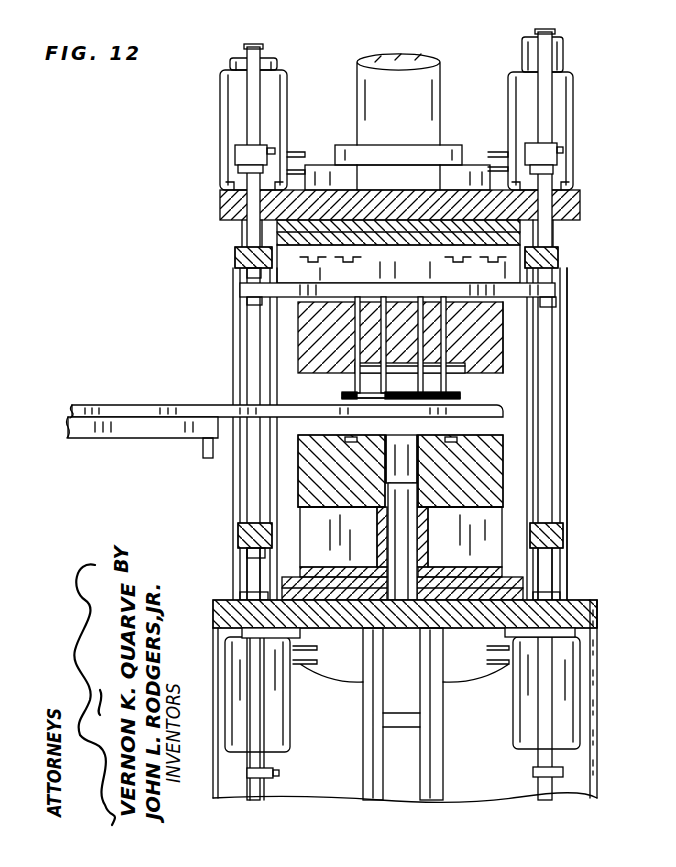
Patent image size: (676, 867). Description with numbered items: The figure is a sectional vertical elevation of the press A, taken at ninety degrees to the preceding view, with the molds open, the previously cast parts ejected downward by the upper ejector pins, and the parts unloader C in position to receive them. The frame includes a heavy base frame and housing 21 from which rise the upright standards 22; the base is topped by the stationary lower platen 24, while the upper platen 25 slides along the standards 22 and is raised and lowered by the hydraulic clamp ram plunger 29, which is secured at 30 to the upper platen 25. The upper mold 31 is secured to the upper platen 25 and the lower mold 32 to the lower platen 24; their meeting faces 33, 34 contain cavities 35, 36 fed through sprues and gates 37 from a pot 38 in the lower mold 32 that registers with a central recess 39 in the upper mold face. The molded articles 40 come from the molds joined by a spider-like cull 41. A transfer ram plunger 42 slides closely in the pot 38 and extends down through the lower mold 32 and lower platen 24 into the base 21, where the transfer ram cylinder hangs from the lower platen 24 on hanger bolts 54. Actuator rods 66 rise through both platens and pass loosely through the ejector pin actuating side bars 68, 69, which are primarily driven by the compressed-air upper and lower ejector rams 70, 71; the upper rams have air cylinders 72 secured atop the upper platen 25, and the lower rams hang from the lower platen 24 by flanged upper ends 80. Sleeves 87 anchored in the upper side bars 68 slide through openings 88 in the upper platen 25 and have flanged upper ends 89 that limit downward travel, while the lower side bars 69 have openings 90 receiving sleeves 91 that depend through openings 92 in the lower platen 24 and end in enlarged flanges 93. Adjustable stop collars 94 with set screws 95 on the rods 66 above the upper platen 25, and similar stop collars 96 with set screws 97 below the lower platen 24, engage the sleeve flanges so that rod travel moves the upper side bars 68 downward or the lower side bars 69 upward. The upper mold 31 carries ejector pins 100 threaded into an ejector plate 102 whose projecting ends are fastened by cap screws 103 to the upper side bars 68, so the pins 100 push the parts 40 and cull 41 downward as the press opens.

The base frame and housing 21 is at (578, 783).
The standards 22 is at (233, 488).
The lower platen 24 is at (586, 617).
The upper platen 25 is at (220, 206).
The plunger 29 is at (385, 76).
The securing connection 30 is at (412, 158).
The upper mold 31 is at (298, 322).
The lower mold 32 is at (503, 480).
The upper mold face 33 is at (503, 368).
The lower mold face 34 is at (503, 447).
The upper mold cavity 35 is at (357, 370).
The lower mold cavity 36 is at (355, 437).
The sprues and gates 37 is at (414, 400).
The pot 38 is at (392, 448).
The central recess 39 is at (388, 360).
The molded articles 40 is at (461, 397).
The cull 41 is at (396, 388).
The transfer ram plunger 42 is at (404, 535).
The hanger bolts 54 is at (367, 748).
The actuator rods 66 is at (259, 110).
The upper side bars 68 is at (235, 260).
The lower side bars 69 is at (238, 528).
The upper ejector rams 70 is at (222, 95).
The lower ejector rams 71 is at (228, 665).
The air cylinders 72 is at (560, 76).
The flanged upper end 80 is at (301, 636).
The sleeves 87 is at (248, 228).
The openings 88 is at (582, 200).
The flanged upper ends 89 is at (238, 167).
The openings 90 is at (236, 548).
The sleeves 91 is at (258, 572).
The openings 92 is at (245, 600).
The enlarged flanges 93 is at (250, 632).
The stop collars 94 is at (235, 150).
The set screws 95 is at (563, 150).
The stop collars 96 is at (248, 773).
The set screws 97 is at (279, 774).
The ejector pins 100 is at (385, 382).
The ejector plate 102 is at (565, 291).
The cap screws 103 is at (558, 304).
The press A is at (571, 400).
The unloader mechanism C is at (123, 407).